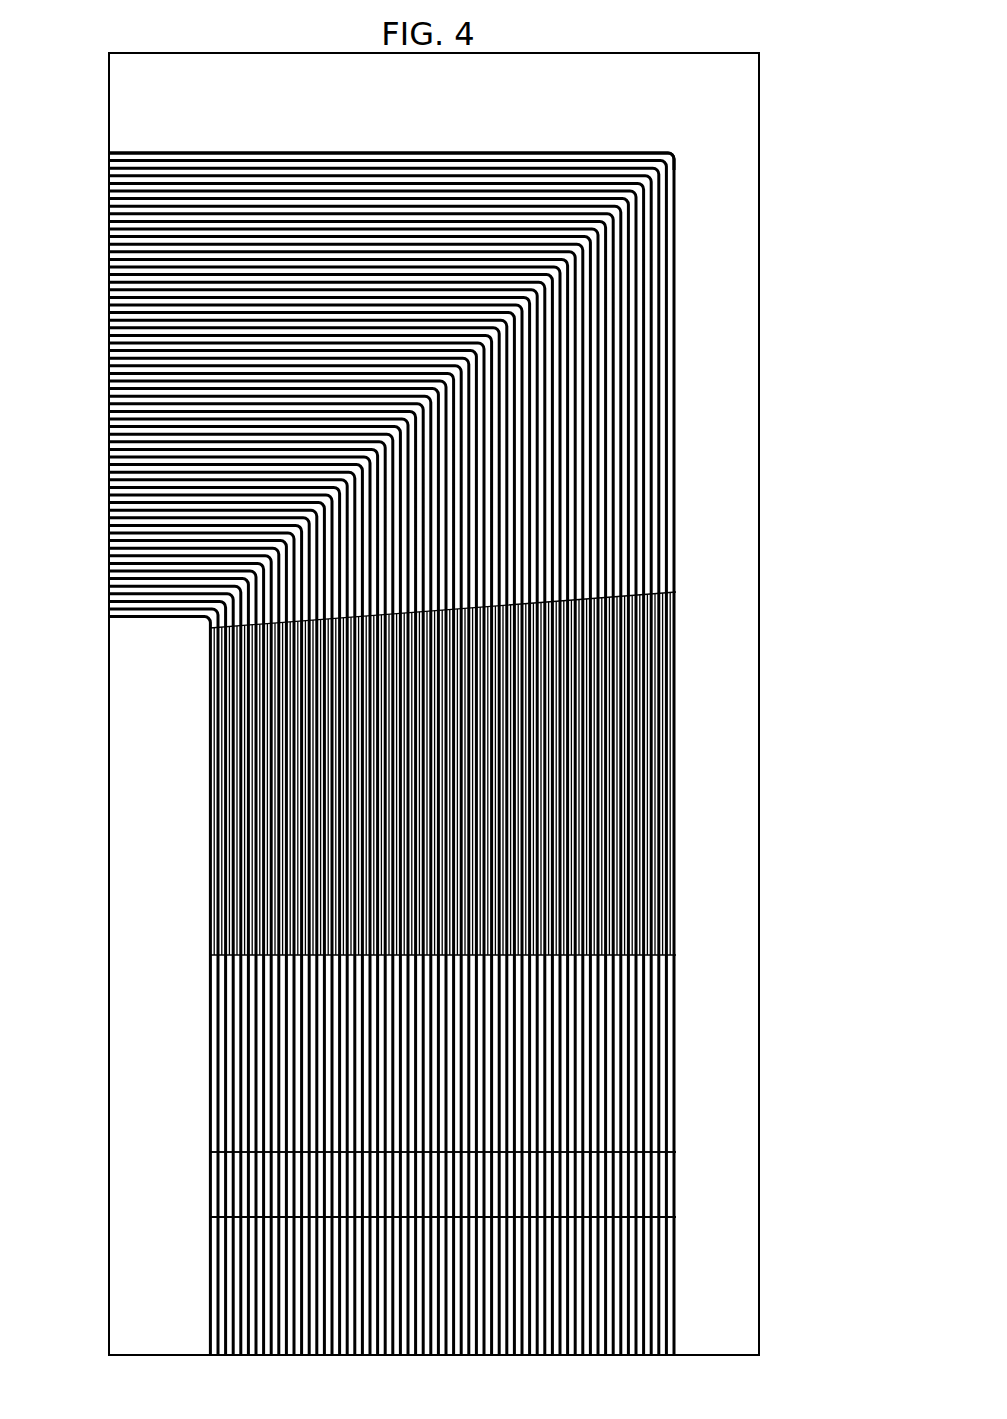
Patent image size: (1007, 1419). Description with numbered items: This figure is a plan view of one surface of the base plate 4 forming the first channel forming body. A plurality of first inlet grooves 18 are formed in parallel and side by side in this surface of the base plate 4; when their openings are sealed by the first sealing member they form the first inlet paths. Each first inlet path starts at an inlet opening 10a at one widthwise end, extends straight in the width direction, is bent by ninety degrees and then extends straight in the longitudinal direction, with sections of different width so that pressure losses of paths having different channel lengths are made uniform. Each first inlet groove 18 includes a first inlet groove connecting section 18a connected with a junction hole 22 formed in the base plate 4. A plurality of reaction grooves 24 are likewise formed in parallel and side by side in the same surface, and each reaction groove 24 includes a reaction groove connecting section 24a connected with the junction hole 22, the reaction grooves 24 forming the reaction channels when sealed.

The base plate 4 is at (109, 802).
The inlet opening 10a is at (109, 205).
The first inlet groove 18 is at (674, 412).
The first inlet groove connecting section 18a is at (676, 1135).
The junction hole 22 is at (676, 1190).
The reaction groove 24 is at (676, 1305).
The reaction groove connecting section 24a is at (676, 1240).